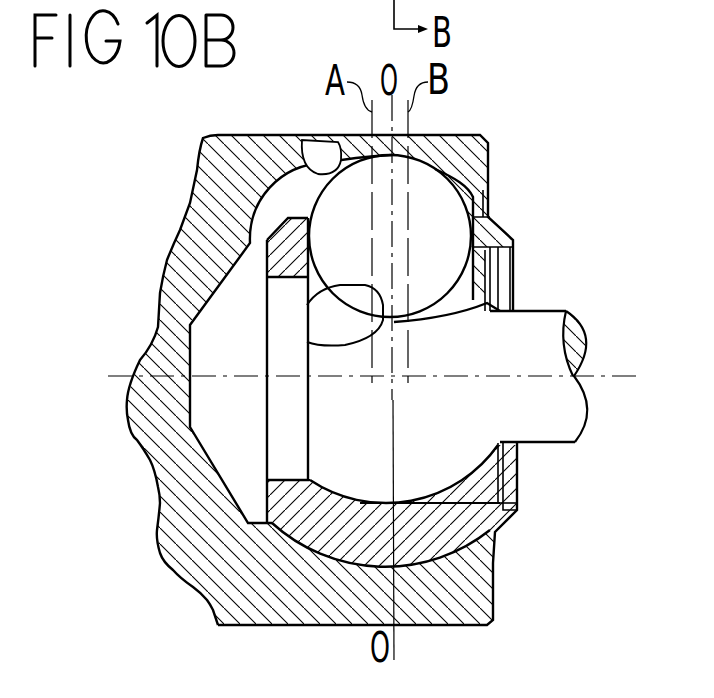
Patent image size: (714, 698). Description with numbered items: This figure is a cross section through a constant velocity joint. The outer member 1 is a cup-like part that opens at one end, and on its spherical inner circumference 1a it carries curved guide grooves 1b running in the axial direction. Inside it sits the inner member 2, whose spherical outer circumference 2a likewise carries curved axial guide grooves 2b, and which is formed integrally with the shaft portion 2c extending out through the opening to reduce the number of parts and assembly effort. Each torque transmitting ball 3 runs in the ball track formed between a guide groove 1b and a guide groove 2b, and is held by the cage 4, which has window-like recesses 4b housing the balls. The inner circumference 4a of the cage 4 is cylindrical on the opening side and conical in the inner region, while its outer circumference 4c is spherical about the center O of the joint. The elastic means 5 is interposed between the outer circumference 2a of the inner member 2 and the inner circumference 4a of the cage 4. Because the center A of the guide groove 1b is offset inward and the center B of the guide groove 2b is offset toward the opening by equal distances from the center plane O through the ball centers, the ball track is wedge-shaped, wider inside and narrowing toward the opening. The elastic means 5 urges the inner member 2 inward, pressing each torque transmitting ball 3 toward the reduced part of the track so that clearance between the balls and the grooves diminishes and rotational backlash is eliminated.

The outer member 1 is at (198, 143).
The spherical inner circumference 1a is at (367, 558).
The guide groove 1b is at (302, 140).
The inner member 2 is at (463, 347).
The spherical outer circumference 2a is at (322, 506).
The guide groove 2b is at (327, 290).
The shaft portion 2c is at (553, 322).
The torque transmitting ball 3 is at (434, 221).
The cage 4 is at (303, 522).
The inner circumference of the cage 4a is at (385, 503).
The window-like recess 4b is at (265, 181).
The outer circumference of the cage 4c is at (247, 630).
The elastic means 5 is at (474, 512).